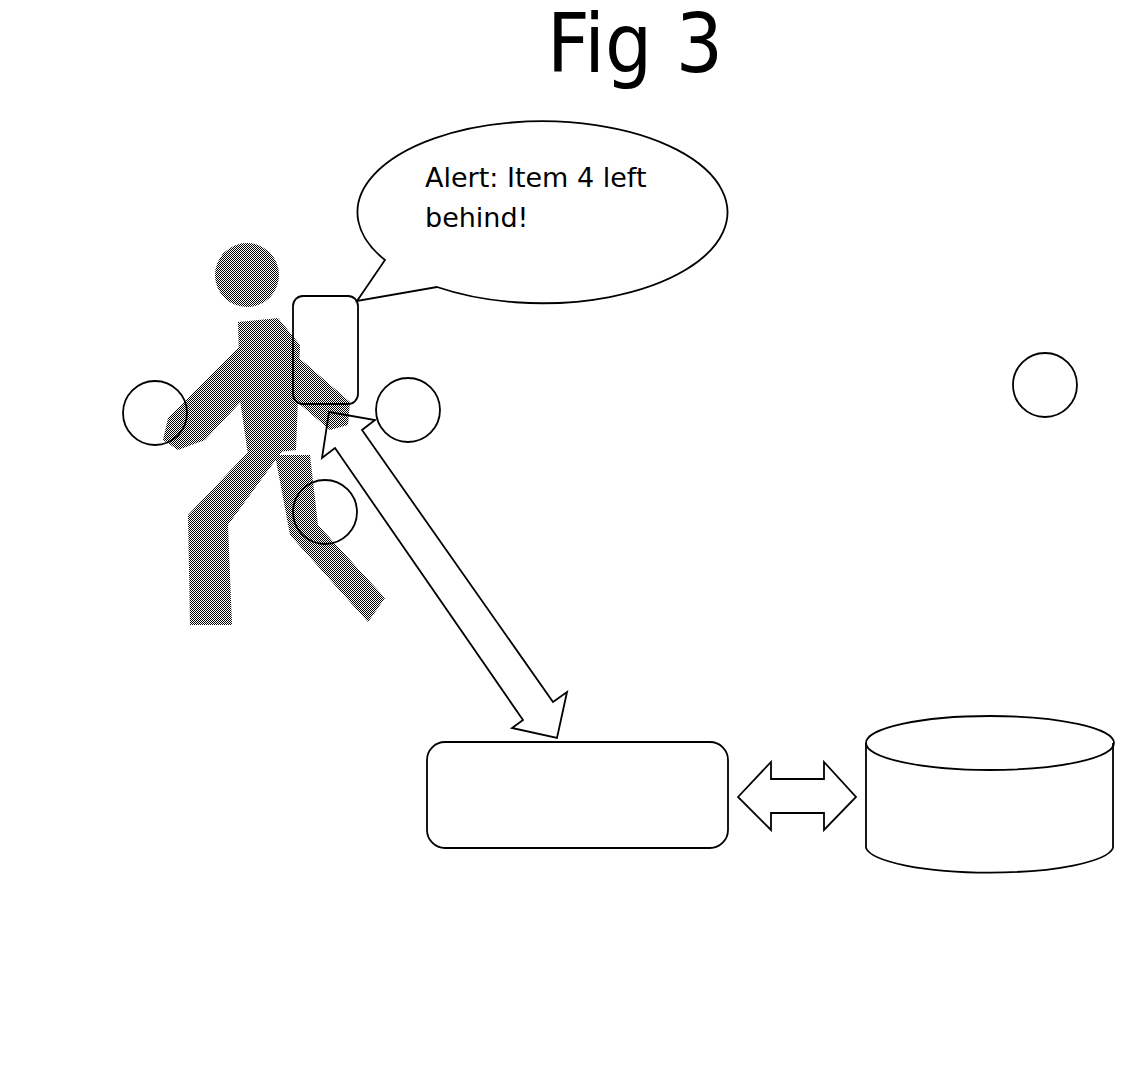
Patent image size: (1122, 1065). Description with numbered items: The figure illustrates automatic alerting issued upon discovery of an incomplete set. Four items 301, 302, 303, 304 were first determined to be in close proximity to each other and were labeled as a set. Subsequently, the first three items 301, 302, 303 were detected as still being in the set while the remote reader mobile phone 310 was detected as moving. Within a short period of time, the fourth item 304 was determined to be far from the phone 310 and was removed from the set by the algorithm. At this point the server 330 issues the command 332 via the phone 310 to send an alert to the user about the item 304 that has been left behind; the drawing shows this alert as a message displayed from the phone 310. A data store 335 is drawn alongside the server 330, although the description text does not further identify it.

The item 301 is at (155, 448).
The item 302 is at (436, 410).
The item 303 is at (325, 535).
The item 304 is at (1045, 407).
The remote reader mobile phone 310 is at (325, 329).
The server 330 is at (577, 826).
The command 332 is at (444, 575).
The database 335 is at (990, 826).